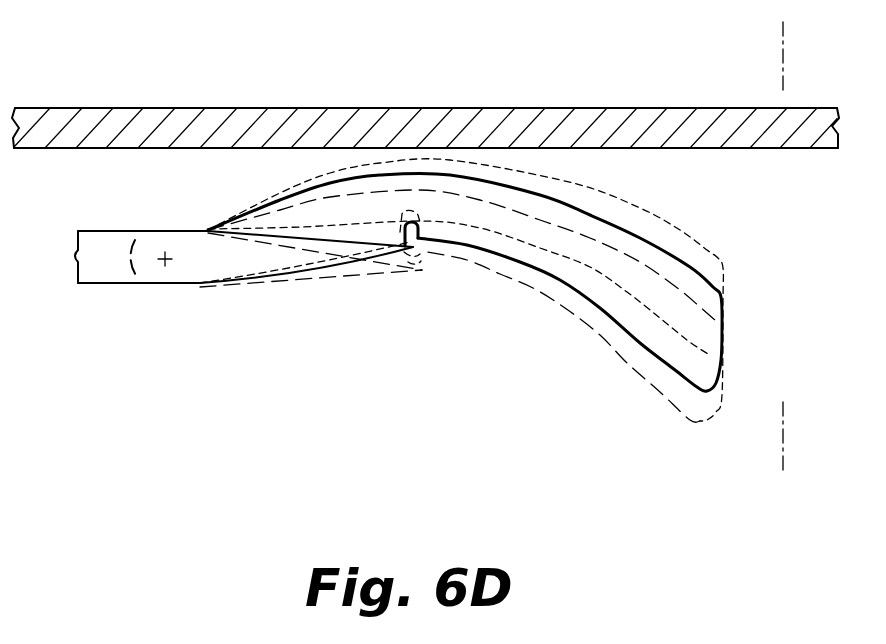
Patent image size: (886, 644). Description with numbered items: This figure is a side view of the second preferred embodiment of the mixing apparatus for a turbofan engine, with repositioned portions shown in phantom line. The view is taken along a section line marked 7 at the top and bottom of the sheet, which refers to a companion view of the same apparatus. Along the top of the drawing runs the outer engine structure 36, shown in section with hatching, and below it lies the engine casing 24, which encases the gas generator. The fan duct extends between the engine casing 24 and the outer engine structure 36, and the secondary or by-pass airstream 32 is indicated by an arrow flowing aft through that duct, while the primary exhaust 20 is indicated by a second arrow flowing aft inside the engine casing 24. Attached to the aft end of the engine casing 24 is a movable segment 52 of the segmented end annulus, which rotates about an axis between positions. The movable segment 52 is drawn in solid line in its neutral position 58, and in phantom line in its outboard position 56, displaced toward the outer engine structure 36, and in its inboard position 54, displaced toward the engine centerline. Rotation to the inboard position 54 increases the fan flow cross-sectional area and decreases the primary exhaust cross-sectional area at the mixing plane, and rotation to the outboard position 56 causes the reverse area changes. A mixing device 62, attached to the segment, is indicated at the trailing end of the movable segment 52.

The section line 7- 7 is at (838, 31).
The primary exhaust 20 is at (148, 320).
The engine casing 24 is at (76, 258).
The secondary or by-pass airstream 32 is at (148, 182).
The outer engine structure 36 is at (387, 125).
The movable segment 52 is at (194, 231).
The inboard position 54 is at (646, 383).
The outboard position 56 is at (683, 228).
The neutral position 58 is at (696, 271).
The mixing device 62 is at (754, 333).